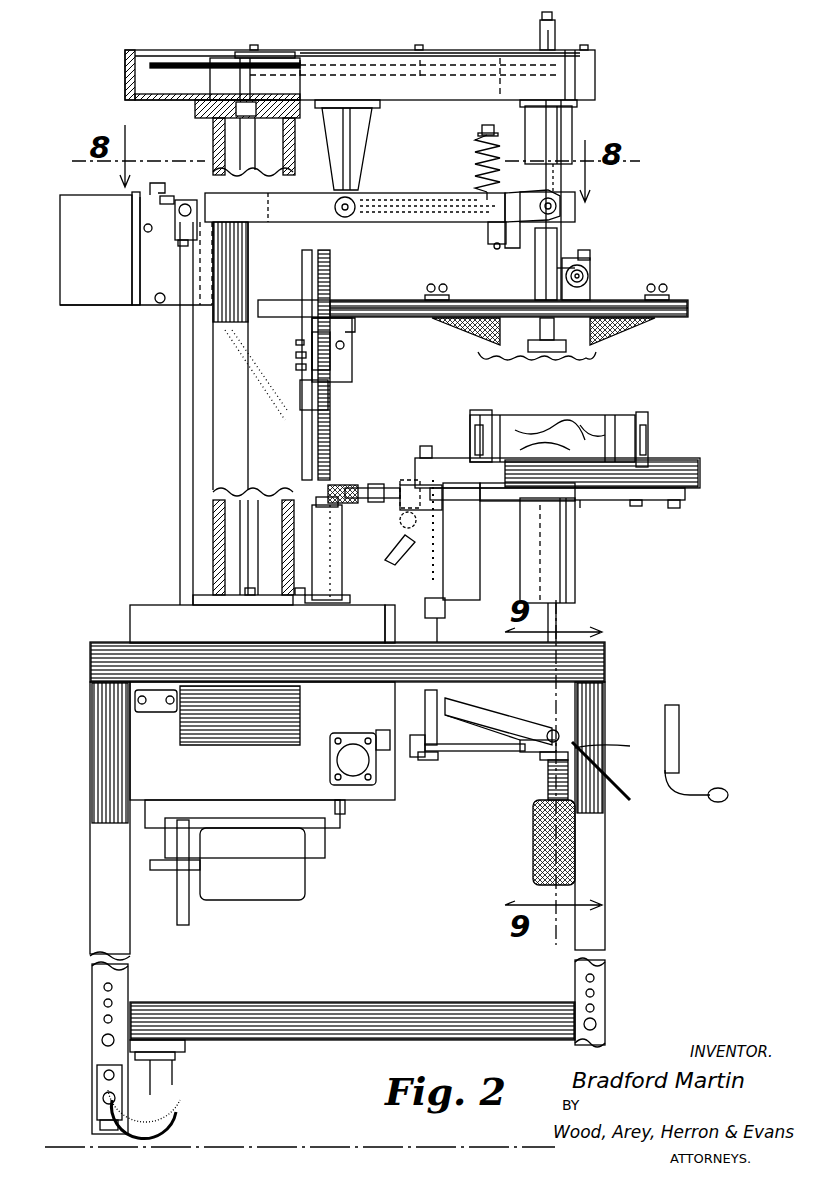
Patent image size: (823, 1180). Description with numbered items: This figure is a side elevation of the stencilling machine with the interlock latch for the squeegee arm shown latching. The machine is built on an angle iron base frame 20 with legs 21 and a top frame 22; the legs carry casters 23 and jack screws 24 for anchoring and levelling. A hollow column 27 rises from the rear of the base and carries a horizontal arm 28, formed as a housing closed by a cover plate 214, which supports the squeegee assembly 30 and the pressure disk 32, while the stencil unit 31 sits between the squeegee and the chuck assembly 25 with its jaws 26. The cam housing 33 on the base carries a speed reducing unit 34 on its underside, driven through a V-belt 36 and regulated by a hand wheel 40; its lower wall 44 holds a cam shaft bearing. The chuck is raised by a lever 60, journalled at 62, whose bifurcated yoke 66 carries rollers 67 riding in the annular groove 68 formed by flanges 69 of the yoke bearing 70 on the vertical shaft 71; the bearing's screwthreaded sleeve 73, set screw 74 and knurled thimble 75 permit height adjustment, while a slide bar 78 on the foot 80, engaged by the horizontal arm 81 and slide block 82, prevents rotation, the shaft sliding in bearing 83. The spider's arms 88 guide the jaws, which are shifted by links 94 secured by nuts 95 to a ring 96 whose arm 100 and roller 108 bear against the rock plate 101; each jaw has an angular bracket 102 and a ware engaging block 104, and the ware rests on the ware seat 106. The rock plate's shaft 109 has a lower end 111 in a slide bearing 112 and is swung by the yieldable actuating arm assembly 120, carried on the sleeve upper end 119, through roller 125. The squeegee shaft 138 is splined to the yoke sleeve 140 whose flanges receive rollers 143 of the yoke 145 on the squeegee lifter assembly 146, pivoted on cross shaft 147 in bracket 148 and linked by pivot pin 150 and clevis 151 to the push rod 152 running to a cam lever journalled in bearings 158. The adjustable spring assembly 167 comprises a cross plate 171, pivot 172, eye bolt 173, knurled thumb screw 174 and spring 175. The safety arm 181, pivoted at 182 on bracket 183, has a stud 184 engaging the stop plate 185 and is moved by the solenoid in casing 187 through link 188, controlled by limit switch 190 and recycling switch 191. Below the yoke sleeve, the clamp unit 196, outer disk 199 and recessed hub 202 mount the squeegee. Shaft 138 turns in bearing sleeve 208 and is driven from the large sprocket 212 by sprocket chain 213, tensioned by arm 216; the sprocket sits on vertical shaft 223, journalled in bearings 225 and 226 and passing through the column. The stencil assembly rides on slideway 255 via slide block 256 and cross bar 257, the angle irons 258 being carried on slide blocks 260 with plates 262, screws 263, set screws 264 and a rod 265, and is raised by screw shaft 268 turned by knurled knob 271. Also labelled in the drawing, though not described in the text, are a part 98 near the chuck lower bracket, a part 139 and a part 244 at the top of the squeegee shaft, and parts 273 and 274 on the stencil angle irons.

The angle iron base frame 20 is at (90, 772).
The legs 21 is at (92, 918).
The top frame 22 is at (90, 662).
The casters 23 is at (176, 1082).
The jack screws 24 is at (97, 1105).
The chuck assembly 25 is at (700, 470).
The movable jaws 26 is at (472, 436).
The column 27 is at (216, 470).
The horizontal arm 28 is at (596, 65).
The squeegee assembly 30 is at (576, 240).
The stencil unit 31 is at (690, 298).
The pressure disk 32 is at (560, 352).
The cam housing 33 is at (262, 741).
The speed reducing unit 34 is at (290, 890).
The V-belt 36 is at (185, 925).
The hand wheel 40 is at (689, 751).
The lower wall 44 is at (340, 814).
The lever 60 is at (470, 706).
The journals 62 is at (158, 712).
The bifurcated yoke 66 is at (500, 735).
The rollers 67 is at (560, 732).
The annular groove 68 is at (630, 746).
The flanges 69 is at (535, 720).
The yoke bearing 70 is at (618, 792).
The vertical shaft 71 is at (558, 616).
The screwthreaded sleeve 73 is at (548, 780).
The set screw 74 is at (545, 758).
The knurled thimble 75 is at (533, 866).
The slide bar 78 is at (428, 760).
The foot 80 is at (576, 545).
The horizontal arm 81 is at (472, 751).
The slide block 82 is at (414, 753).
The bearing 83 is at (578, 565).
The arm 88 is at (688, 484).
The link 94 is at (638, 490).
The nut 95 is at (664, 502).
The ring 96 is at (588, 496).
The bracket 98 is at (575, 501).
The arm 100 is at (472, 510).
The rock plate 101 is at (478, 553).
The angular bracket 102 is at (648, 415).
The ware engaging block 104 is at (495, 420).
The ware seat 106 is at (562, 428).
The roller 108 is at (445, 520).
The shaft 109 is at (426, 440).
The lower end of shaft 111 is at (425, 699).
The slide bearing 112 is at (425, 608).
The upper end of sleeve 119 is at (342, 573).
The yieldable actuating arm assembly 120 is at (362, 490).
The roller 125 is at (405, 480).
The shaft 138 is at (540, 37).
The nut 139 is at (542, 15).
The yoke sleeve 140 is at (535, 258).
The rollers 143 is at (576, 208).
The yoke 145 is at (516, 222).
The squeegee lifter assembly 146 is at (397, 182).
The cross shaft 147 is at (350, 218).
The bracket 148 is at (338, 145).
The pivot pin 150 is at (190, 205).
The clevis 151 is at (190, 240).
The push rod 152 is at (179, 398).
The bearings 158 is at (337, 746).
The adjustable spring assembly 167 is at (474, 162).
The cross plate 171 is at (488, 236).
The pivot 172 is at (494, 248).
The eye bolt 173 is at (494, 128).
The knurled thumb screw 174 is at (480, 132).
The spring 175 is at (478, 176).
The arm 181 is at (155, 182).
The pivot 182 is at (157, 304).
The bracket 183 is at (176, 308).
The stud 184 is at (150, 192).
The stop plate 185 is at (170, 196).
The casing 187 is at (62, 280).
The link 188 is at (143, 227).
The limit switch 190 is at (410, 528).
The recycling switch 191 is at (382, 730).
The clamp unit 196 is at (588, 276).
The outer disk 199 is at (585, 252).
The recessed hub 202 is at (552, 270).
The bearing sleeve 208 is at (545, 83).
The large sprocket 212 is at (225, 85).
The sprocket chain 213 is at (295, 58).
The cover plate 214 is at (395, 52).
The arm 216 is at (418, 80).
The vertical shaft 223 is at (247, 500).
The bearing 225 is at (245, 598).
The bearing 226 is at (200, 114).
The pin 244 is at (556, 28).
The slideway 255 is at (302, 434).
The slide block 256 is at (300, 398).
The cross bar 257 is at (340, 360).
The angle irons 258 is at (385, 300).
The slide blocks 260 is at (360, 328).
The plate 262 is at (296, 356).
The screws 263 is at (296, 368).
The set screw 264 is at (296, 343).
The rod 265 is at (345, 345).
The screw shaft 268 is at (331, 406).
The knurled knob 271 is at (345, 484).
The wing nut 273 is at (450, 295).
The wing nut 274 is at (658, 286).